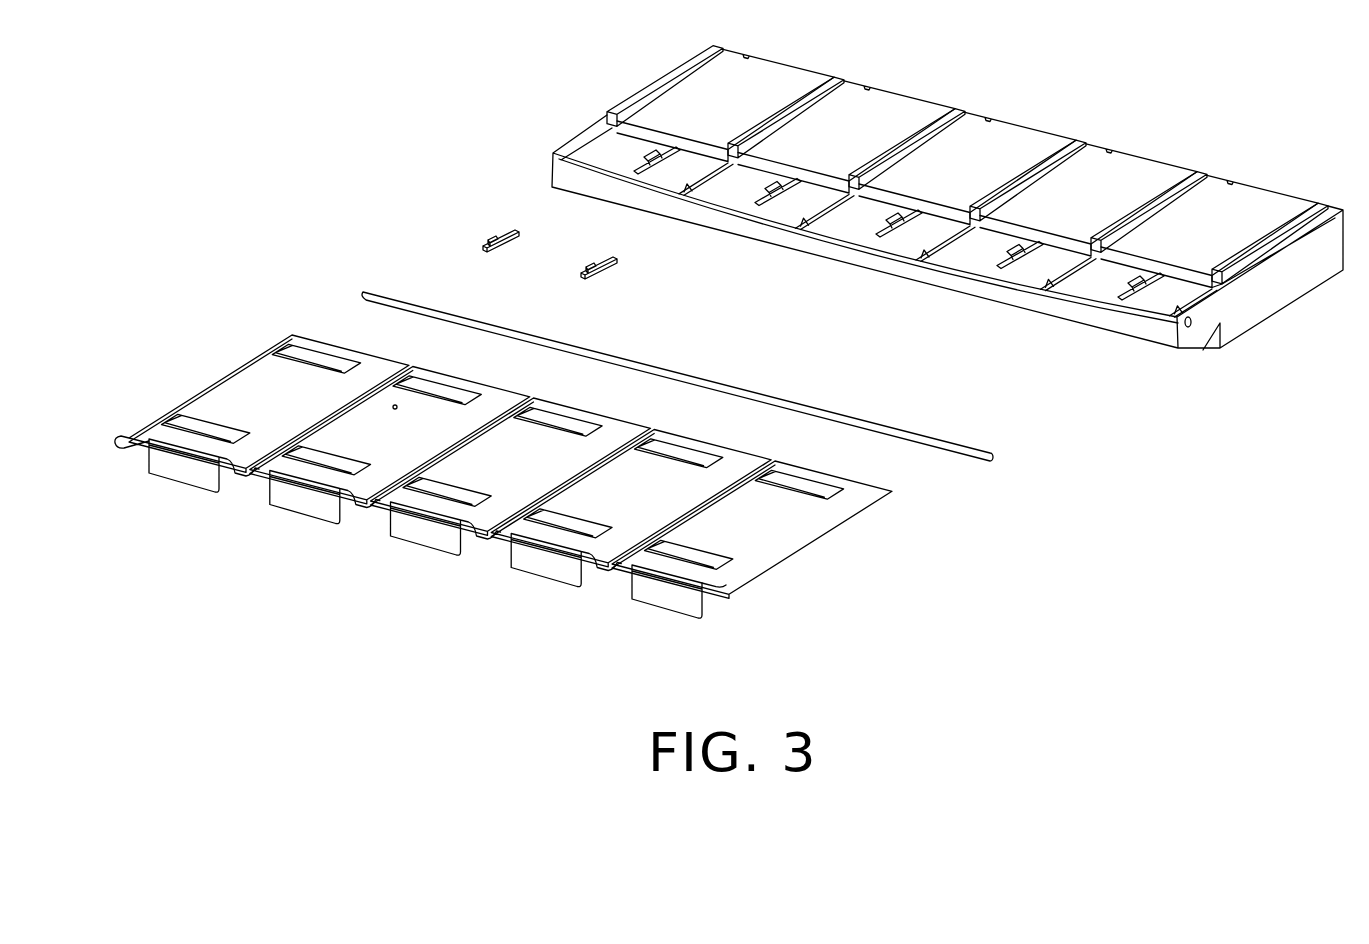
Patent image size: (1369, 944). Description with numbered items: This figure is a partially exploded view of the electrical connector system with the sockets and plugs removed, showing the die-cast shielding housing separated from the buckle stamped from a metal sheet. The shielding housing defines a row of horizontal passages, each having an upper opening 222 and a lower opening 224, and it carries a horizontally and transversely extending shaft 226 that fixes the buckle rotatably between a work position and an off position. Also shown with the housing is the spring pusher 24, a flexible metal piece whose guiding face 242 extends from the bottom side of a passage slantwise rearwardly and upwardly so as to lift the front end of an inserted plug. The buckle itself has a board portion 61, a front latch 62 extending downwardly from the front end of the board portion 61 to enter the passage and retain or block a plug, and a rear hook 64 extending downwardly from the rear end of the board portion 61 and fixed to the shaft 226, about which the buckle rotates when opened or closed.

The spring pusher 24 is at (593, 257).
The guiding face 242 is at (493, 241).
The upper opening 222 is at (1170, 293).
The lower opening 224 is at (1183, 343).
The shaft 226 is at (922, 437).
The board portion 61 is at (554, 506).
The front latch 62 is at (813, 490).
The rear hook 64 is at (673, 597).